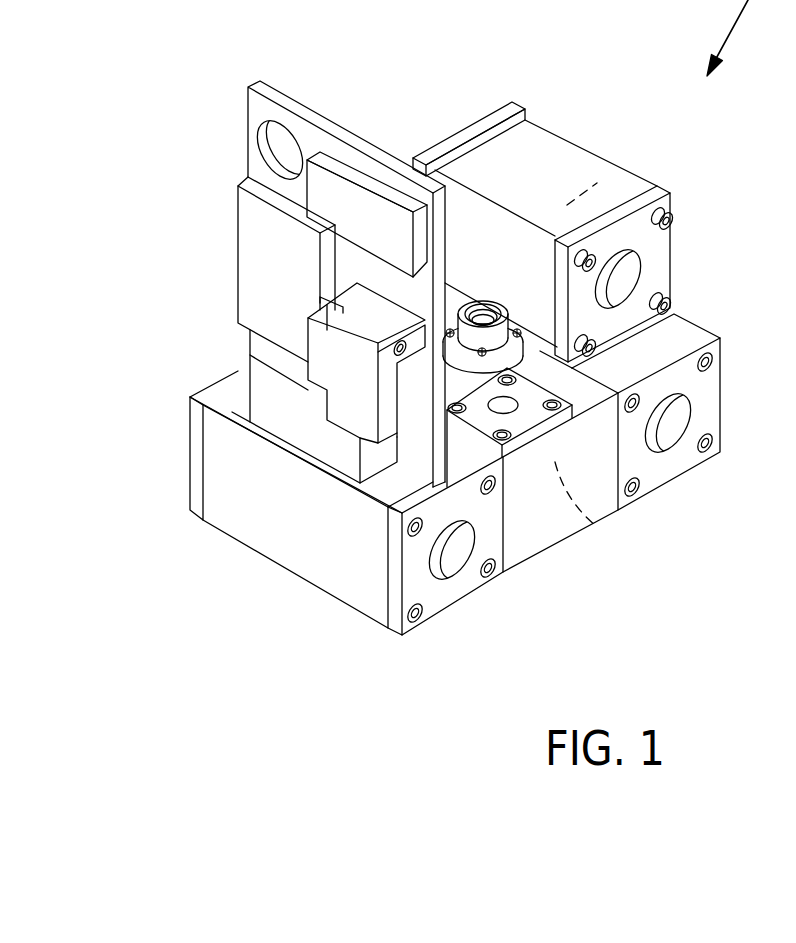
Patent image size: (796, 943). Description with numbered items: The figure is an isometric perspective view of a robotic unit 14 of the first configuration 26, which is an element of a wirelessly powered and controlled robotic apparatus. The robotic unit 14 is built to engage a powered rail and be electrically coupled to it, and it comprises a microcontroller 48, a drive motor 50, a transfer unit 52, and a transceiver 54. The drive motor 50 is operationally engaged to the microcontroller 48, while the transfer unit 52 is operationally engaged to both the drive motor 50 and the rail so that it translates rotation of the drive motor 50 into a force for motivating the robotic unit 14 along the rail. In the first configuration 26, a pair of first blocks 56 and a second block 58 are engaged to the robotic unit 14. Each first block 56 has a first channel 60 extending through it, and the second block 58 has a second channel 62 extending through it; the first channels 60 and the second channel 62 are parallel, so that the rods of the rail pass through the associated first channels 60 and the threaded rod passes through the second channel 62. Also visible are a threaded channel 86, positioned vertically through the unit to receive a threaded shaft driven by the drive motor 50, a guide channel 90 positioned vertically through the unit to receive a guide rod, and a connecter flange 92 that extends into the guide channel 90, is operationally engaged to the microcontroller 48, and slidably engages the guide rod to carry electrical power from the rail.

The robotic unit 14 is at (547, 135).
The first configuration 26 is at (245, 546).
The microcontroller 48 is at (345, 355).
The drive motor 50 is at (625, 237).
The transfer unit 52 is at (509, 152).
The transceiver 54 is at (325, 185).
The first blocks 56 is at (413, 562).
The second block 58 is at (636, 190).
The first channel 60 is at (443, 548).
The second channel 62 is at (620, 267).
The threaded channel 86 is at (488, 307).
The guide channel 90 is at (507, 412).
The connecter flange 92 is at (590, 540).